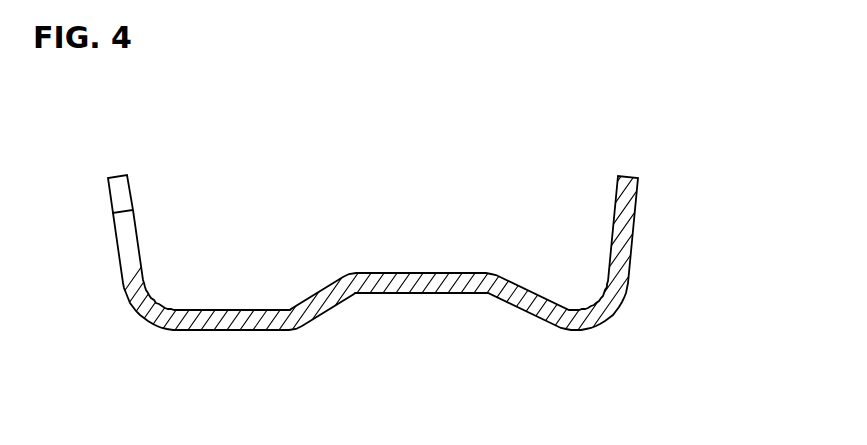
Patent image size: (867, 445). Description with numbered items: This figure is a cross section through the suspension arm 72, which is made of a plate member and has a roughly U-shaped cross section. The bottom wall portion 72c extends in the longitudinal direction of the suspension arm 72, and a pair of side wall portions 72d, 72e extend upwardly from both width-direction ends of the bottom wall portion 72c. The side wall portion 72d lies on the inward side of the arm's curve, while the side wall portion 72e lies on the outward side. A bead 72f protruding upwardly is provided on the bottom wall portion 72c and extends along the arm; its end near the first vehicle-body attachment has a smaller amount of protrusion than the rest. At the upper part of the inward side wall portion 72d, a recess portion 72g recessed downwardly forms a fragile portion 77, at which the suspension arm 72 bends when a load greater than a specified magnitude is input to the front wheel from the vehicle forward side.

The suspension arm 72 is at (654, 186).
The bottom wall portion 72c is at (222, 330).
The side wall portion 72d is at (117, 243).
The side wall portion 72e is at (632, 230).
The bead 72f is at (402, 293).
The recess portion 72g is at (177, 167).
The fragile portion 77 is at (120, 208).